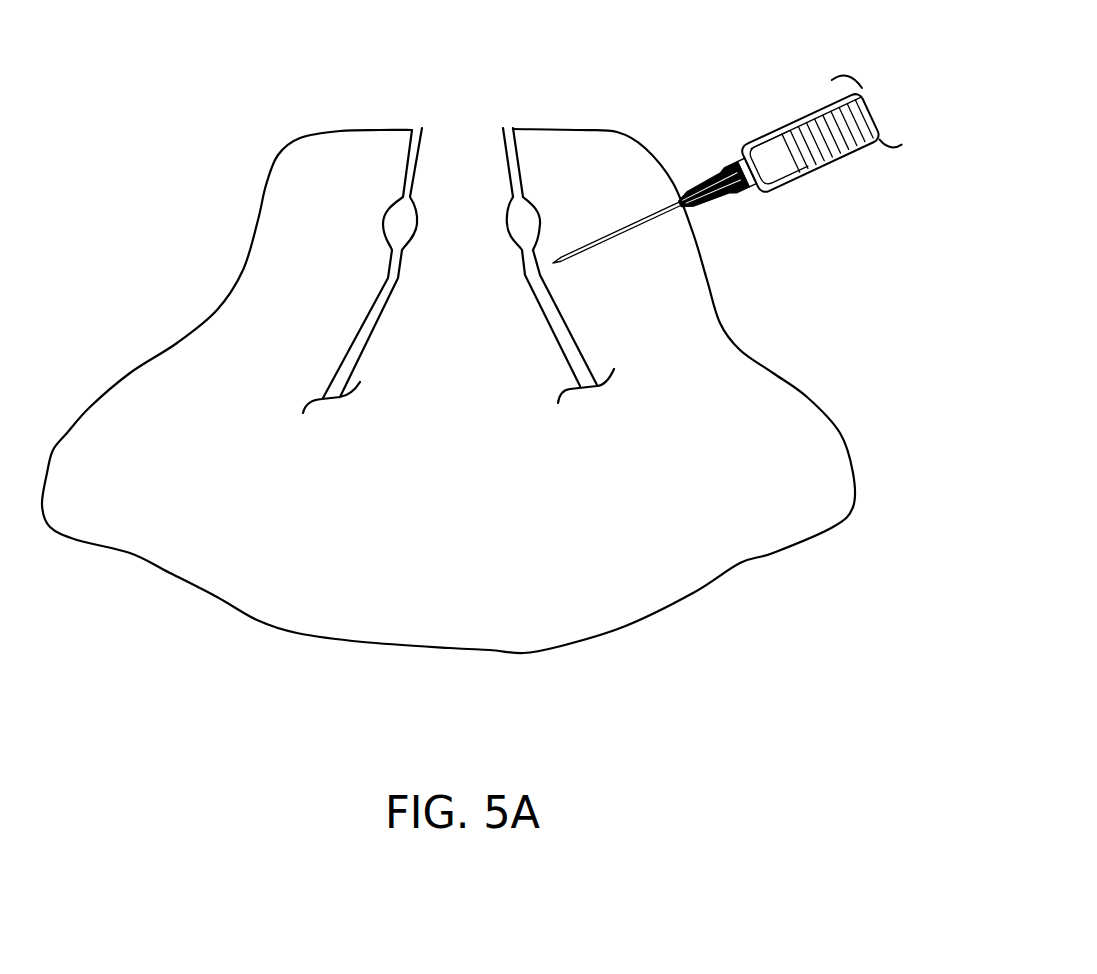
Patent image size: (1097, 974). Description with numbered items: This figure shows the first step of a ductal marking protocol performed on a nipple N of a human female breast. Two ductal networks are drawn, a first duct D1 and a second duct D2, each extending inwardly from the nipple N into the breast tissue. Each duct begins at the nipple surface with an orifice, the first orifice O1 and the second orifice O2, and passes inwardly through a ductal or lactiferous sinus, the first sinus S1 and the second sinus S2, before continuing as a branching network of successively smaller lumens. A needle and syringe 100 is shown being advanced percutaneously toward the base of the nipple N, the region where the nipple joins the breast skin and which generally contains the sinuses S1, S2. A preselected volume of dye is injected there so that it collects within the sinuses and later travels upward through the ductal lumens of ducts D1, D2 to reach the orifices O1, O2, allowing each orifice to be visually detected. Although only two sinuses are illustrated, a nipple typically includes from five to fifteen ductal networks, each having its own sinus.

The nipple N is at (237, 212).
The orifice O1 is at (412, 130).
The orifice O2 is at (517, 127).
The ductal sinus S1 is at (386, 213).
The ductal sinus S2 is at (521, 249).
The ductal network D1 is at (370, 328).
The ductal network D2 is at (577, 343).
The needle and syringe 100 is at (760, 126).